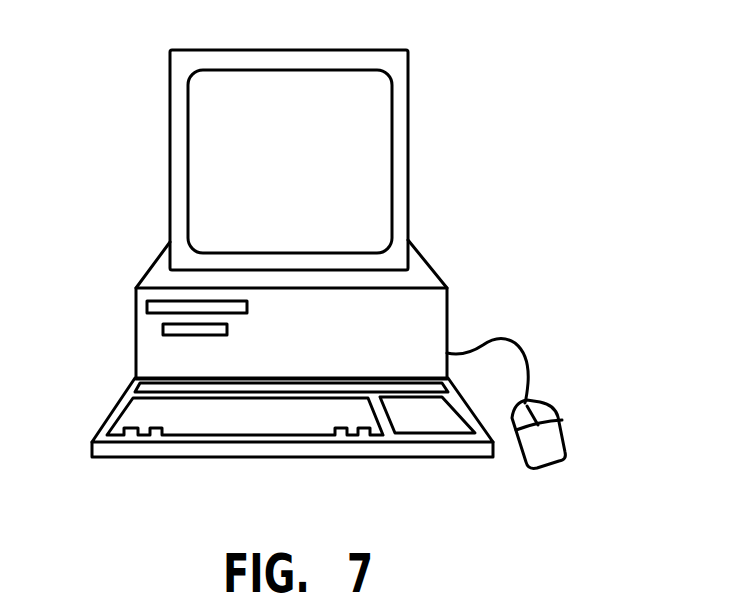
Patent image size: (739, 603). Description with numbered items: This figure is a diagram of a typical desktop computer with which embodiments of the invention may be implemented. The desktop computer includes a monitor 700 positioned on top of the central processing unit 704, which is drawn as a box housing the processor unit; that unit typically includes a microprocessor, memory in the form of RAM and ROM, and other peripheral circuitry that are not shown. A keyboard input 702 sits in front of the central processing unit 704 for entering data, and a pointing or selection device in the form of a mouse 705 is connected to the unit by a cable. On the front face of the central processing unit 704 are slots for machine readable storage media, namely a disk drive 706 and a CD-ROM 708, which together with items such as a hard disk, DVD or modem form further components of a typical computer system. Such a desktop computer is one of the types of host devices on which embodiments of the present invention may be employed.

The monitor 700 is at (410, 122).
The keyboard input 702 is at (118, 403).
The central processing unit 704 is at (430, 256).
The mouse 705 is at (557, 401).
The disk drive 706 is at (163, 330).
The CD-ROM 708 is at (148, 308).